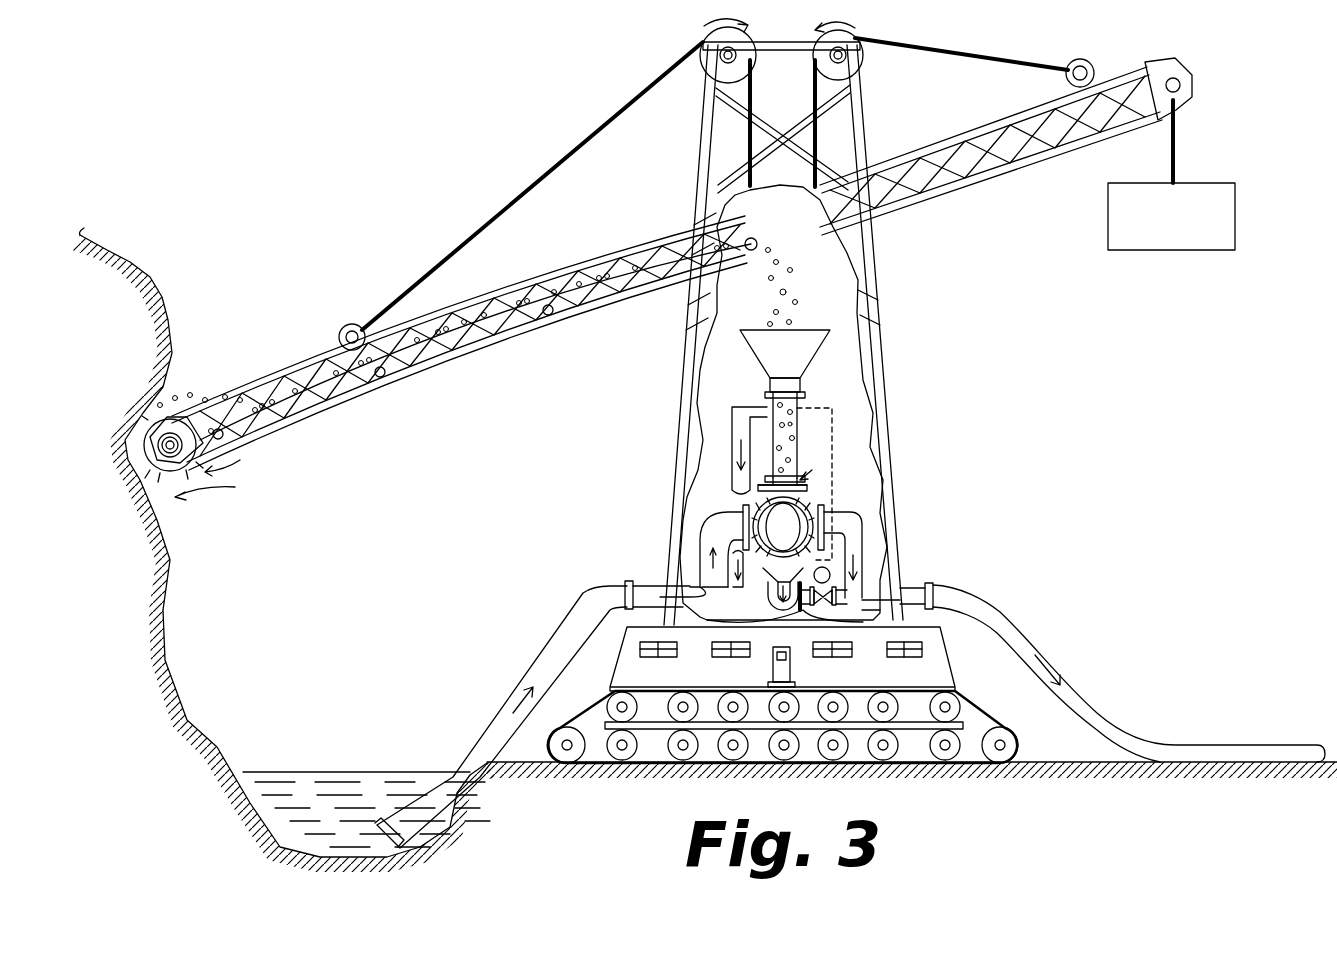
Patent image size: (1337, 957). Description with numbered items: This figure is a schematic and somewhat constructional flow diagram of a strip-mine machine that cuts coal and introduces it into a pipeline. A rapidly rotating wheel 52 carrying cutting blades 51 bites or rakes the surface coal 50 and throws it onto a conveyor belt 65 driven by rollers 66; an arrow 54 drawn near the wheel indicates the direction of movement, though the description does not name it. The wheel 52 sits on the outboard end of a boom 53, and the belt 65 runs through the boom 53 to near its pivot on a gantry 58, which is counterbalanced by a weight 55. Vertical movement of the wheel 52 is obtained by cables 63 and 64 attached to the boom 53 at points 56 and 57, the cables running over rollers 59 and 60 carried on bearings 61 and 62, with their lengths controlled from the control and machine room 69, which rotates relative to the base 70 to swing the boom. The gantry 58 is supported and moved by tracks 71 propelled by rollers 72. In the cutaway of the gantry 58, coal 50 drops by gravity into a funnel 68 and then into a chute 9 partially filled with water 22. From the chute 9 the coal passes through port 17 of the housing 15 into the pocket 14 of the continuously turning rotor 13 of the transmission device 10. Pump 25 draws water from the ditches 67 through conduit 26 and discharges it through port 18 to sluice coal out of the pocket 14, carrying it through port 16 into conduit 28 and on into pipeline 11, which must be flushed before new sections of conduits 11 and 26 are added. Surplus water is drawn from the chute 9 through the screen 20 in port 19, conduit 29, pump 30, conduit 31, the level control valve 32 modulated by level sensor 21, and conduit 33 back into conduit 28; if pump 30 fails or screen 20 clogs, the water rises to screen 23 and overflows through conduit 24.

The chute 9 is at (790, 466).
The transmission device 10 is at (820, 472).
The conduit 11 is at (1080, 693).
The rotor 13 is at (745, 505).
The pocket 14 is at (808, 510).
The housing 15 is at (805, 500).
The port 16 is at (826, 520).
The port 17 is at (794, 464).
The port 18 is at (703, 540).
The port 19 is at (844, 555).
The screen 20 is at (778, 572).
The level sensor 21 is at (800, 398).
The water 22 is at (797, 428).
The screen 23 is at (783, 400).
The conduit 24 is at (742, 405).
The pump 25 is at (700, 527).
The conduit 26 is at (500, 712).
The conduit 28 is at (862, 565).
The conduit 29 is at (768, 600).
The pump 30 is at (800, 610).
The conduit 31 is at (812, 606).
The level control valve 32 is at (823, 610).
The conduit 33 is at (860, 612).
The surface coal 50 is at (190, 415).
The cutting blades 51 is at (196, 425).
The wheel 52 is at (205, 480).
The boom 53 is at (480, 370).
The advance direction 54 is at (180, 492).
The weight 55 is at (1140, 252).
The point 56 is at (355, 322).
The point 57 is at (1095, 66).
The gantry 58 is at (882, 335).
The roller 59 is at (728, 41).
The roller 60 is at (847, 40).
The bearing 61 is at (740, 52).
The bearing 62 is at (850, 50).
The cable 63 is at (550, 168).
The cable 64 is at (968, 58).
The conveyor belt 65 is at (310, 412).
The rollers 66 is at (222, 438).
The ditches 67 is at (300, 772).
The funnel 68 is at (800, 340).
The control and machine room 69 is at (945, 672).
The base 70 is at (958, 696).
The tracks 71 is at (988, 712).
The rollers 72 is at (1005, 744).